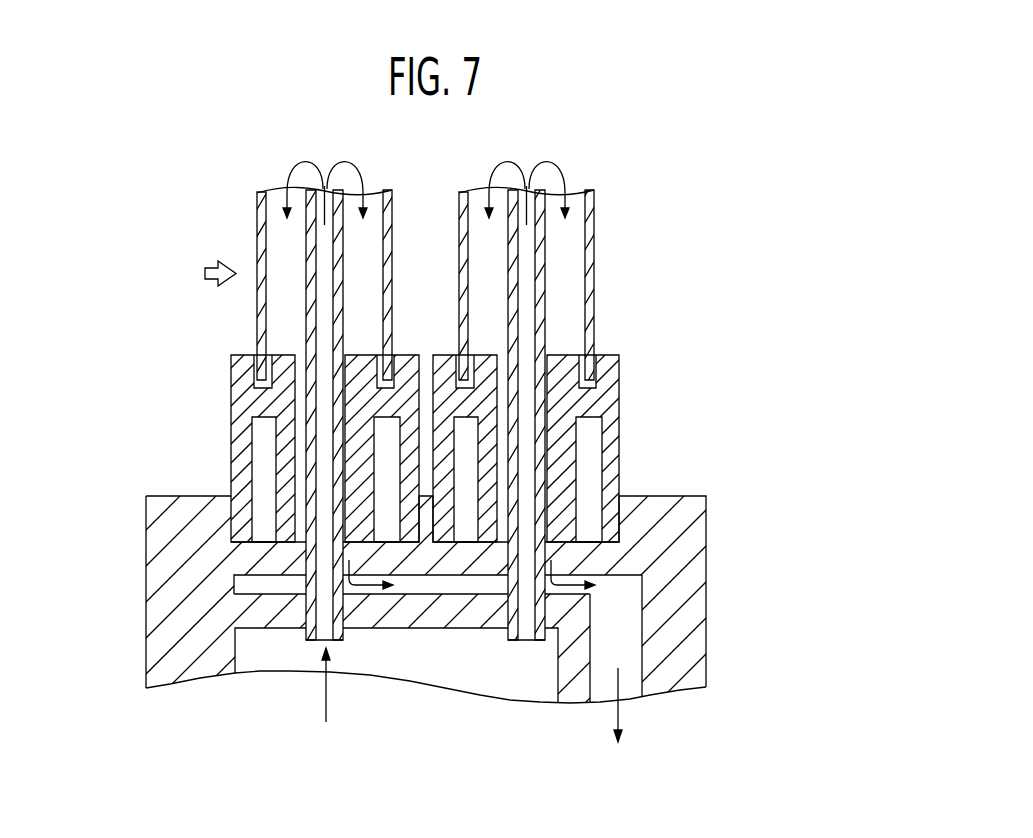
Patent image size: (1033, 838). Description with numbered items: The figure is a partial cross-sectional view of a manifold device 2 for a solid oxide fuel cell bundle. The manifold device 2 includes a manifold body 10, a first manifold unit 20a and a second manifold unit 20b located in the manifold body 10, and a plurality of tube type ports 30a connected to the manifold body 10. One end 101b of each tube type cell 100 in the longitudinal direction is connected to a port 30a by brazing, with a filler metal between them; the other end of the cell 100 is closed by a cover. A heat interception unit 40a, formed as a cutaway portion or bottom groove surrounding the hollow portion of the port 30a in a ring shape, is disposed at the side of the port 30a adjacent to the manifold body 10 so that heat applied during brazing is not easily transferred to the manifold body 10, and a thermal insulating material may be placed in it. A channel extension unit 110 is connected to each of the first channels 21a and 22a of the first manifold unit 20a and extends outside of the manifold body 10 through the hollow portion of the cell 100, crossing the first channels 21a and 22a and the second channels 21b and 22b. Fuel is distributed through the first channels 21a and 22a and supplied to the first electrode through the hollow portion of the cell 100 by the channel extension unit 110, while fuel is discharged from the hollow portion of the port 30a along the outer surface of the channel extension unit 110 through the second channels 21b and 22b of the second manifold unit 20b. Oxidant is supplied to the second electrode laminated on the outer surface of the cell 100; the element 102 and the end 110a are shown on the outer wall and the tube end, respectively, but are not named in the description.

The manifold device 2 is at (160, 443).
The manifold body 10 is at (697, 521).
The first manifold unit 20a is at (268, 658).
The second manifold unit 20b is at (632, 657).
The first channel 21a is at (300, 606).
The second channel 21b is at (300, 550).
The first channel 22a is at (558, 612).
The second channel 22b is at (548, 556).
The tube type port 30a is at (612, 398).
The heat interception unit 40a is at (590, 452).
The tube type cell 100 is at (598, 267).
The one end of the tube type cell 101b is at (617, 373).
The outer tubular electrode 102 is at (563, 237).
The channel extension unit 110 is at (540, 300).
The fuel supply tube end opening 110a is at (528, 642).